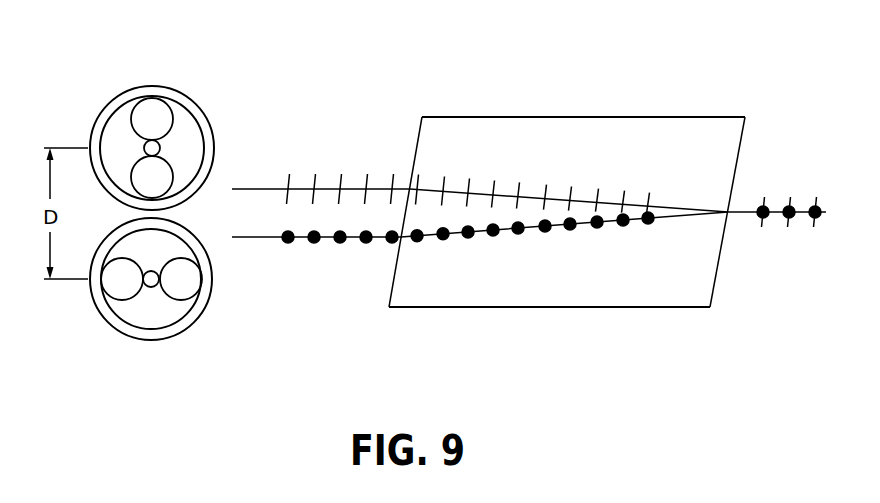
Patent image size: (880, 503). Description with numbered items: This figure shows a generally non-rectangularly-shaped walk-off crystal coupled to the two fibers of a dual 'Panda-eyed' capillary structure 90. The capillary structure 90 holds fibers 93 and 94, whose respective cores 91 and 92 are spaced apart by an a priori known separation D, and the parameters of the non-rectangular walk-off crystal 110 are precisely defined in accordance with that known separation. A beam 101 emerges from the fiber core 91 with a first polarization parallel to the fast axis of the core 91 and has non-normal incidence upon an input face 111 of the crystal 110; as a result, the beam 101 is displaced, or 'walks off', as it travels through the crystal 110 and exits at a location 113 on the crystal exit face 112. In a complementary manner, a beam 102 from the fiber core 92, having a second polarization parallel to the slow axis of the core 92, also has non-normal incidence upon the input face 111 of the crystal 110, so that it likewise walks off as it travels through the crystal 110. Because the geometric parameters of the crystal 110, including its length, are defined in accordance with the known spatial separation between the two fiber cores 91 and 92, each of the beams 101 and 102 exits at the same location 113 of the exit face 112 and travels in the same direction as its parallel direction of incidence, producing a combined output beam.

The dual 'Panda-eyed' capillary structure 90 is at (118, 60).
The fiber core 91 is at (155, 287).
The fiber core 92 is at (160, 146).
The fiber 93 is at (115, 331).
The fiber 94 is at (148, 87).
The beam 101 is at (232, 240).
The beam 102 is at (245, 188).
The non-rectangular walk-off crystal 110 is at (622, 117).
The input face 111 is at (419, 137).
The crystal exit face 112 is at (742, 147).
The location 113 is at (728, 212).